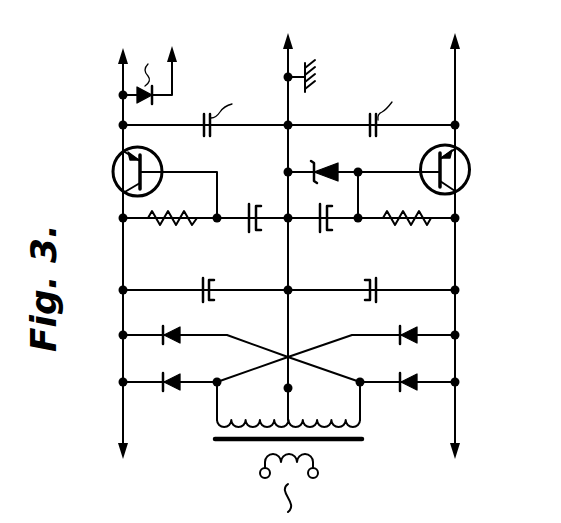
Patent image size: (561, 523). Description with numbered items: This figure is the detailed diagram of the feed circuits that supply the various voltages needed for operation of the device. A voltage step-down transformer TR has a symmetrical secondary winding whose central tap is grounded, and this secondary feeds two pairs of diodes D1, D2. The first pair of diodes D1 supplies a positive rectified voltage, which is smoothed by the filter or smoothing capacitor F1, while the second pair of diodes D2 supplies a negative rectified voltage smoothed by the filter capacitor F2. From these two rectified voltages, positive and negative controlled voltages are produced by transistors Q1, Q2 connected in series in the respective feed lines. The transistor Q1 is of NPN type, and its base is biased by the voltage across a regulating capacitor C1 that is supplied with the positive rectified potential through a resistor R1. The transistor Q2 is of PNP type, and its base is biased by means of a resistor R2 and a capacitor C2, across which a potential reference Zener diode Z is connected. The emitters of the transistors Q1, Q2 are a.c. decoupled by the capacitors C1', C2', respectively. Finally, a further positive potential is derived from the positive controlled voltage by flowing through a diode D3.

The diode D3 is at (141, 71).
The decoupling capacitor C1' is at (230, 112).
The decoupling capacitor C2' is at (392, 111).
The transistor Q1 is at (115, 163).
The transistor Q2 is at (470, 172).
The resistor R1 is at (168, 225).
The resistor R2 is at (430, 224).
The regulating capacitor C1 is at (239, 231).
The capacitor C2 is at (315, 233).
The Zener diode Z is at (324, 163).
The filter capacitor F1 is at (214, 298).
The filter capacitor F2 is at (370, 302).
The pair of diodes D1 is at (170, 375).
The pair of diodes D2 is at (384, 356).
The voltage step-down transformer TR is at (238, 446).